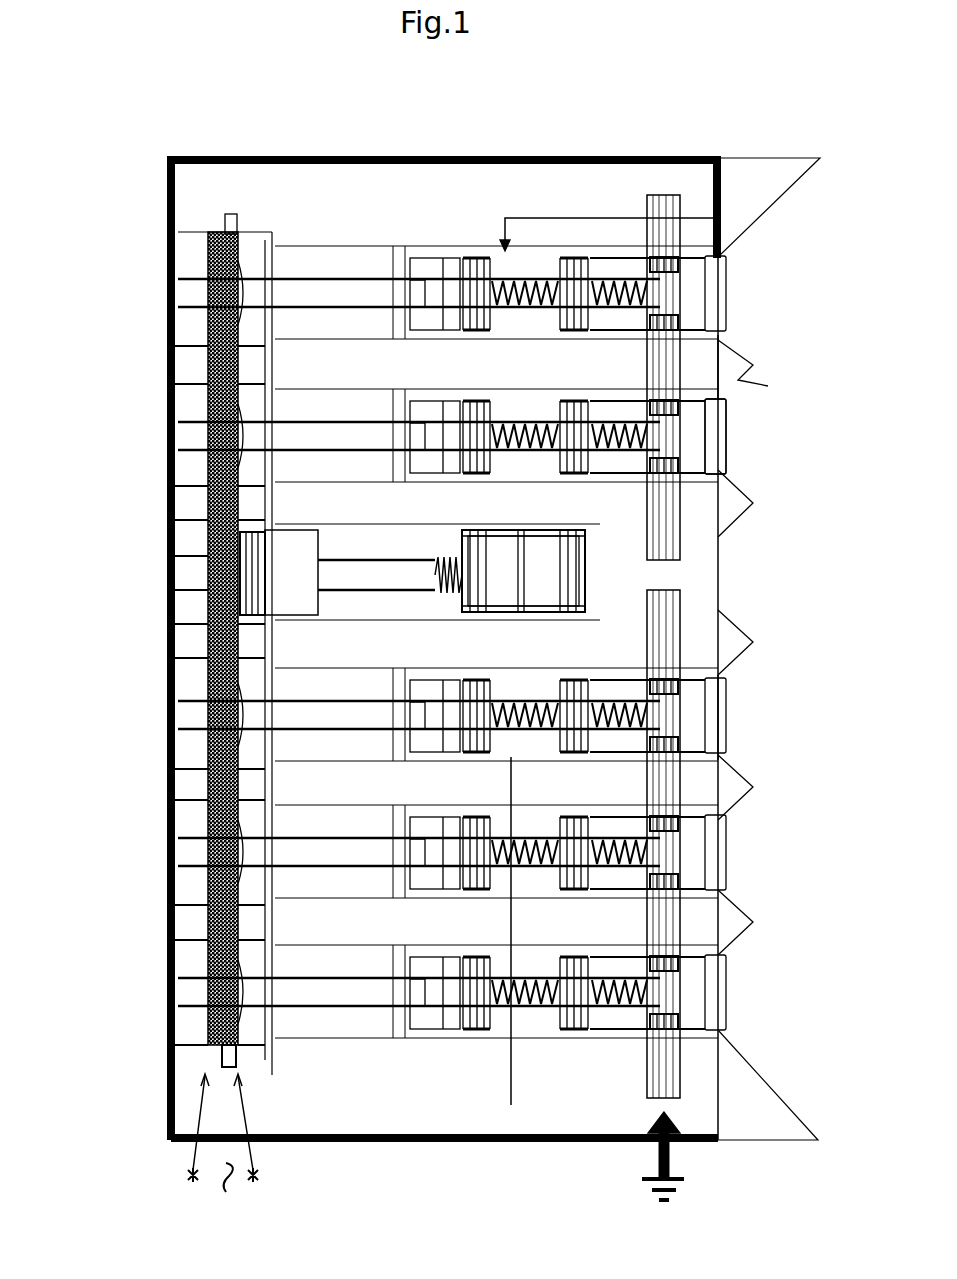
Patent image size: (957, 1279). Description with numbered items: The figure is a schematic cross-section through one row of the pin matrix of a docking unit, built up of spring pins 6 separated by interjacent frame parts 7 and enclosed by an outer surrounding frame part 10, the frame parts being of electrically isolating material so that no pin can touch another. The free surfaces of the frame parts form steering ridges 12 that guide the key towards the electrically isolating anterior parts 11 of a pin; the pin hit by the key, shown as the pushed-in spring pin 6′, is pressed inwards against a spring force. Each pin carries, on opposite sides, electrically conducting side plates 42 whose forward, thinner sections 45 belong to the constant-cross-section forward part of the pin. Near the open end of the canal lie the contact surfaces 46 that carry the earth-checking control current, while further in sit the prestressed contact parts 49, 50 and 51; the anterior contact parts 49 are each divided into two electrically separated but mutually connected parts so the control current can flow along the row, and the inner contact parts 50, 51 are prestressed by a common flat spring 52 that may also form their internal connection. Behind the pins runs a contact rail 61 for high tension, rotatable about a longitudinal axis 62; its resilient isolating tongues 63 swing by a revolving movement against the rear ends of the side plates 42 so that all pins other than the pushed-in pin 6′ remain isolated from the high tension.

The anterior thinner sections 45 is at (763, 273).
The outer surrounding frame part 10 is at (772, 187).
The contact rail 61 is at (222, 263).
The resilient electrically isolating tongues 63 is at (255, 540).
The steering ridges 12 is at (744, 345).
The interjacent frame parts 7 is at (754, 370).
The spring pins 6 is at (690, 437).
The anterior parts of the spring pins 11 is at (728, 433).
The pushed-in spring pin 6′ is at (590, 573).
The electrically conducting side plates 42 is at (433, 711).
The anterior contact parts 49 is at (720, 674).
The inner contact part 51 is at (400, 838).
The common flat spring 52 is at (500, 947).
The inner contact part 50 is at (430, 985).
The contact surfaces 46 is at (662, 916).
The longitudinal axis 62 is at (224, 1057).